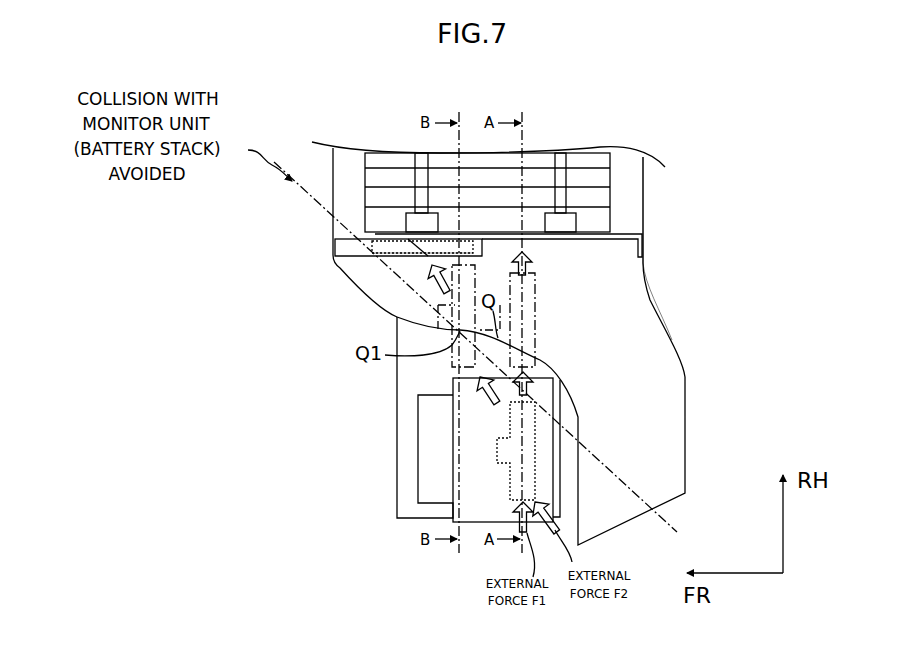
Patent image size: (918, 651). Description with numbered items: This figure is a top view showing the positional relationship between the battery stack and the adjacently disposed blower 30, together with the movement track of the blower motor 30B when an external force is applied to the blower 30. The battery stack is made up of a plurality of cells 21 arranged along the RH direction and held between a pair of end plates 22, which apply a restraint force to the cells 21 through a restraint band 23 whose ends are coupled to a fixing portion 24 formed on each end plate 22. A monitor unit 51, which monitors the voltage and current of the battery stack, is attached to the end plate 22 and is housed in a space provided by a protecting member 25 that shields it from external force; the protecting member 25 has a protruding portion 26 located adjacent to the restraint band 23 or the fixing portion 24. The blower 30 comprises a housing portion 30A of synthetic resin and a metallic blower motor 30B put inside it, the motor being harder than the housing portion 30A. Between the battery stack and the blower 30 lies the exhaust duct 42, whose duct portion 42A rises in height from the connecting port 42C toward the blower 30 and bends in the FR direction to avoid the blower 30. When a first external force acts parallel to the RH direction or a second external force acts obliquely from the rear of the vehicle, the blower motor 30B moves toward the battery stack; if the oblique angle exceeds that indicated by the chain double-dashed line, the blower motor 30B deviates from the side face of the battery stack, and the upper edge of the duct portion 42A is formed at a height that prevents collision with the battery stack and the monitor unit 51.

The cell 21 is at (598, 195).
The end plate 22 is at (603, 215).
The restraint band 23 is at (423, 157).
The fixing portion 24 is at (415, 227).
The protecting member 25 is at (357, 264).
The protruding portion 26 is at (425, 238).
The blower 30 is at (476, 527).
The housing portion 30A is at (418, 460).
The blower motor 30B is at (537, 278).
The exhaust duct 42 is at (688, 387).
The duct portion 42A is at (570, 328).
The connecting port 42C is at (615, 262).
The monitor unit 51 is at (372, 243).